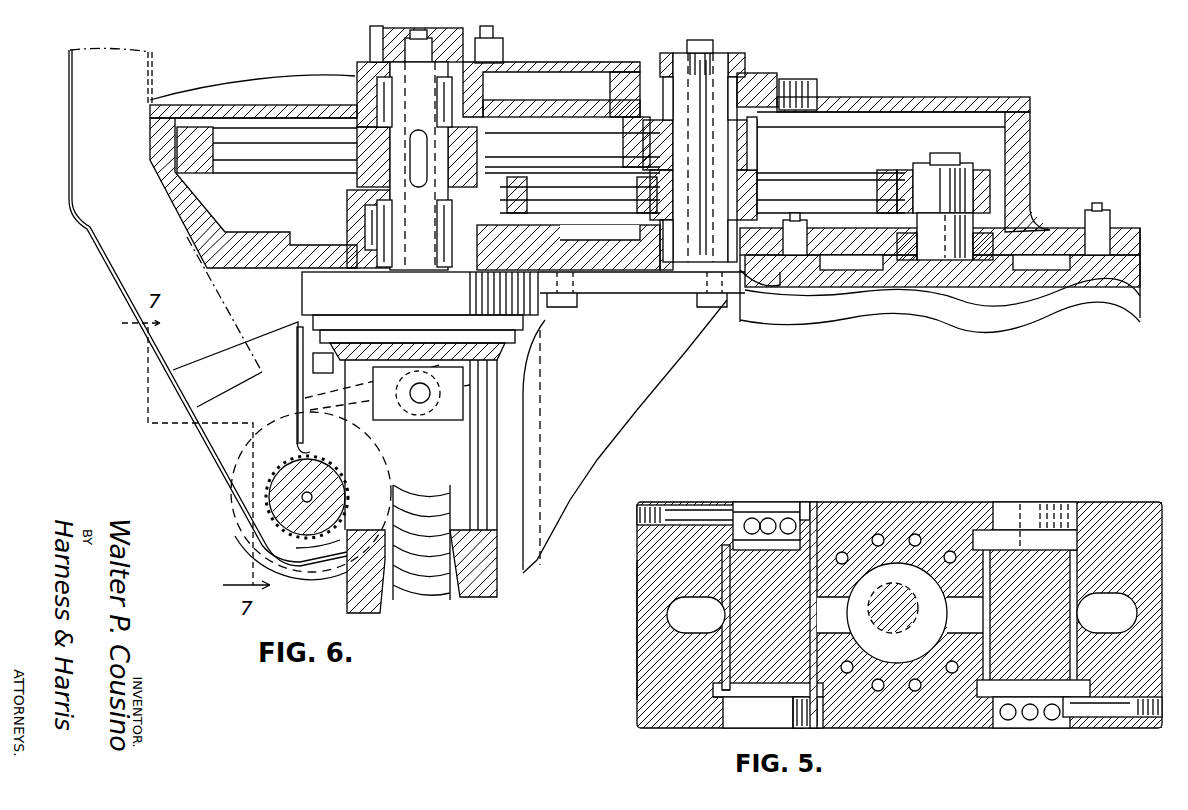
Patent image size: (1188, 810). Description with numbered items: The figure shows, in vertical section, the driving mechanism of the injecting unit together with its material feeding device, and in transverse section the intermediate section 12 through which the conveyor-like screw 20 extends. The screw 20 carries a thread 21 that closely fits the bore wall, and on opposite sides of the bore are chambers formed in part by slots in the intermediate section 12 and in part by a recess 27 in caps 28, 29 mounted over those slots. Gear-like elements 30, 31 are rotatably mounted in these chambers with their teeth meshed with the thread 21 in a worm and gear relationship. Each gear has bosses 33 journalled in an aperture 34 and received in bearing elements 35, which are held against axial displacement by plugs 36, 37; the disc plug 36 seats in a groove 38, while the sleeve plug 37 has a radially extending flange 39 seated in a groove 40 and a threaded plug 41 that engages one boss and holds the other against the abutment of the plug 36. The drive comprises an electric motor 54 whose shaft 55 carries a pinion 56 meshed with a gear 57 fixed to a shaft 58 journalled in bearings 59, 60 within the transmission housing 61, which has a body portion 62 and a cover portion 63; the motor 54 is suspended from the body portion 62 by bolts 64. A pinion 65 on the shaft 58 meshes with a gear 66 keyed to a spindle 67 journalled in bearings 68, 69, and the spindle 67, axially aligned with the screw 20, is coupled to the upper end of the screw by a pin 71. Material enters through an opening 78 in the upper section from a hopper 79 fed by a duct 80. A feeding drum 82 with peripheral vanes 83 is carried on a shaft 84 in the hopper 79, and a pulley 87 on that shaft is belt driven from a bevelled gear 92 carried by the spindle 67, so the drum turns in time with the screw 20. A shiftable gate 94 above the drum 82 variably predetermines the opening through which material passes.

In FIG. 5, the intermediate section 12 is at (946, 722).
In FIG. 6, the conveyor-like screw 20 is at (450, 454).
In FIG. 5, the conveyor-like screw 20 is at (893, 630).
In FIG. 6, the thread 21 is at (450, 512).
In FIG. 5, the thread 21 is at (900, 604).
In FIG. 5, the recess 27 is at (662, 612).
In FIG. 5, the cap 28 is at (1131, 516).
In FIG. 5, the cap 29 is at (652, 586).
In FIG. 5, the gear-like element 30 is at (1096, 626).
In FIG. 5, the gear-like element 31 is at (692, 650).
In FIG. 5, the bosses 33 is at (802, 660).
In FIG. 5, the aperture 34 is at (836, 683).
In FIG. 5, the bearing elements 35 is at (720, 666).
In FIG. 5, the plug 36 is at (778, 695).
In FIG. 5, the plug 37 is at (816, 481).
In FIG. 5, the groove 38 is at (714, 722).
In FIG. 5, the radially extending flange 39 is at (726, 554).
In FIG. 5, the groove 40 is at (692, 545).
In FIG. 5, the threaded plug 41 is at (768, 688).
In FIG. 6, the electric motor 54 is at (1130, 305).
In FIG. 6, the shaft 55 is at (975, 236).
In FIG. 6, the pinion 56 is at (990, 180).
In FIG. 6, the gear 57 is at (887, 170).
In FIG. 6, the shaft 58 is at (713, 90).
In FIG. 6, the bearing 59 is at (760, 206).
In FIG. 6, the bearing 60 is at (748, 100).
In FIG. 6, the transmission housing 61 is at (1056, 221).
In FIG. 6, the body portion 62 is at (1026, 142).
In FIG. 6, the cover portion 63 is at (988, 93).
In FIG. 6, the bolts 64 is at (806, 236).
In FIG. 6, the pinion 65 is at (758, 146).
In FIG. 6, the gear 66 is at (628, 140).
In FIG. 6, the spindle 67 is at (436, 148).
In FIG. 6, the bearing 68 is at (357, 76).
In FIG. 6, the bearing 69 is at (362, 218).
In FIG. 6, the pin 71 is at (418, 393).
In FIG. 6, the opening 78 is at (385, 448).
In FIG. 6, the hopper 79 is at (216, 466).
In FIG. 6, the duct 80 is at (112, 280).
In FIG. 6, the feeding drum 82 is at (266, 520).
In FIG. 6, the vanes 83 is at (270, 505).
In FIG. 6, the shaft 84 is at (296, 548).
In FIG. 6, the pulley 87 is at (305, 574).
In FIG. 6, the bevelled gear 92 is at (486, 375).
In FIG. 6, the gate 94 is at (297, 440).